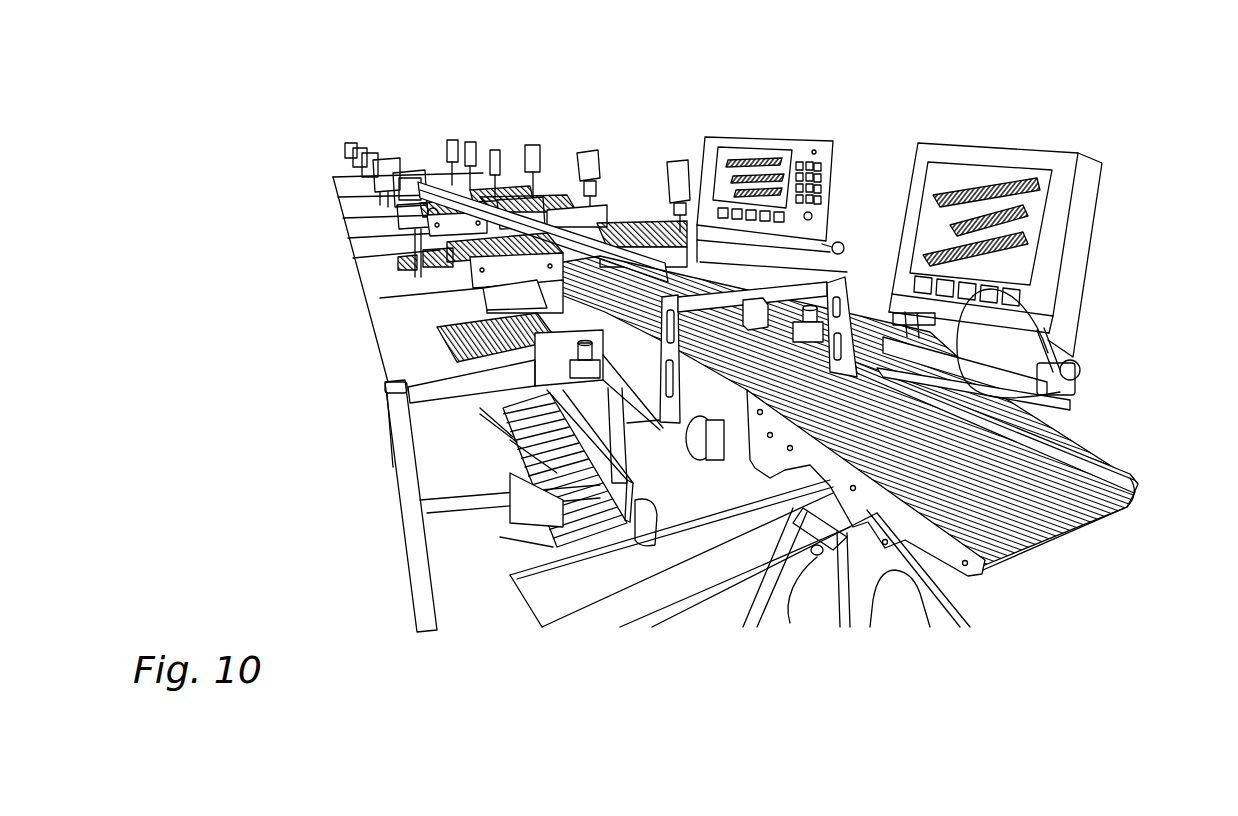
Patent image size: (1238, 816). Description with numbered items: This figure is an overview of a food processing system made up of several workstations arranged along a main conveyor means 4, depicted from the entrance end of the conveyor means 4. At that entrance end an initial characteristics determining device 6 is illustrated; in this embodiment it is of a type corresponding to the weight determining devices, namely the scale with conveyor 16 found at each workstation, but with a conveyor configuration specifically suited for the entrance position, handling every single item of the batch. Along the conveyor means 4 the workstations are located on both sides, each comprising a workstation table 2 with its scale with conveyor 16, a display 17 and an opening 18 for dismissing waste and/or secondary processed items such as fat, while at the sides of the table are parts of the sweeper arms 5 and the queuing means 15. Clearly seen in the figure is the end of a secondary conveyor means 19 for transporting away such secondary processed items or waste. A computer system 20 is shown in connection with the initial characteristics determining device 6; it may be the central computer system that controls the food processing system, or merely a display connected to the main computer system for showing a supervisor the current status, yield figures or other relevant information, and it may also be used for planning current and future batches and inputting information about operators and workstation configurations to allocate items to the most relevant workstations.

The workstation table 2 is at (400, 305).
The conveyor means 4 is at (610, 278).
The sweeper arms 5 is at (520, 305).
The initial characteristics determining device 6 is at (1027, 497).
The queuing means 15 is at (510, 368).
The scale with conveyor 16 is at (405, 262).
The display 17 is at (412, 185).
The opening 18 is at (475, 296).
The secondary conveyor means 19 is at (570, 483).
The computer system 20 is at (1028, 238).